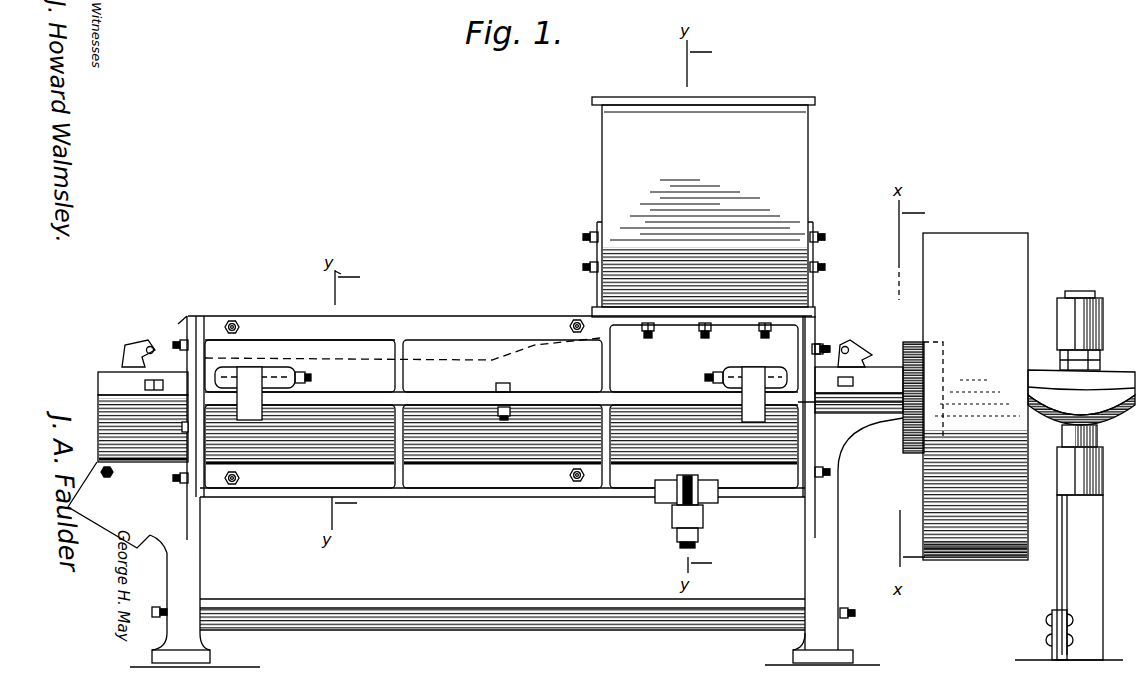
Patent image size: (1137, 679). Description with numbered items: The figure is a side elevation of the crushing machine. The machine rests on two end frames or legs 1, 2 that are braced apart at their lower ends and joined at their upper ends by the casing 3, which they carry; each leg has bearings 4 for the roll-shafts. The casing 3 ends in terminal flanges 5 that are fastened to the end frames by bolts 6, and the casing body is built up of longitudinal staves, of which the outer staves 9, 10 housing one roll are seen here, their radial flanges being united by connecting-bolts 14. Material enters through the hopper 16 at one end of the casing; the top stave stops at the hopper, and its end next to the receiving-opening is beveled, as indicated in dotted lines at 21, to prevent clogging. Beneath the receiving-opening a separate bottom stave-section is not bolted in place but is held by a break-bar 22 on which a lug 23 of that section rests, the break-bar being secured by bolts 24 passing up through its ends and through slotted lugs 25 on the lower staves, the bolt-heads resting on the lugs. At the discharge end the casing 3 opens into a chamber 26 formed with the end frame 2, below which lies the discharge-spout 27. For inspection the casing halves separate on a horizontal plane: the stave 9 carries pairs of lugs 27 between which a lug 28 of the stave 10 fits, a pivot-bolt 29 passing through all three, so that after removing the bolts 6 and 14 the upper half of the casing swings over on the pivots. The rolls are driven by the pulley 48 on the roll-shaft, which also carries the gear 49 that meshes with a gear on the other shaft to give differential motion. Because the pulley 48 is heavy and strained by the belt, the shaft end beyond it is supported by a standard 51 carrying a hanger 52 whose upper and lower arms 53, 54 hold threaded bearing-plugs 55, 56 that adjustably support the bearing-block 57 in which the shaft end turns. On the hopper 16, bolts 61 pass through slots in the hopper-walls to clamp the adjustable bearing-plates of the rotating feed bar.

The end frame 1 is at (805, 551).
The end frame 2 is at (195, 567).
The casing 3 is at (500, 314).
The bearings 4 is at (120, 375).
The terminal flanges 5 is at (200, 320).
The bolts 6 is at (178, 345).
The outer stave 9 is at (433, 352).
The outer stave 10 is at (375, 460).
The connecting-bolts 14 is at (236, 322).
The hopper 16 is at (712, 112).
The beveled end of top stave 21 is at (534, 346).
The break-bar 22 is at (703, 516).
The lug 23 is at (339, 320).
The bolts 24 is at (696, 545).
The slotted lugs 25 is at (668, 497).
The chamber 26 is at (98, 408).
The lugs 27 is at (88, 470).
The lug 28 is at (256, 370).
The pivot-bolt 29 is at (308, 377).
The pulley 48 is at (1010, 245).
The gear 49 is at (908, 340).
The standard 51 is at (1093, 548).
The hanger 52 is at (1101, 364).
The upper arm 53 is at (1060, 308).
The lower arm 54 is at (1100, 482).
The bearing-plug 55 is at (1078, 291).
The bearing-plug 56 is at (1098, 440).
The bearing-block 57 is at (1052, 380).
The bolts 61 is at (583, 238).